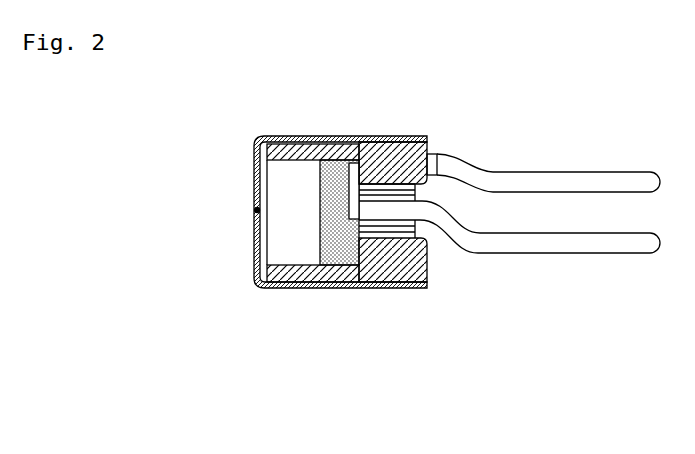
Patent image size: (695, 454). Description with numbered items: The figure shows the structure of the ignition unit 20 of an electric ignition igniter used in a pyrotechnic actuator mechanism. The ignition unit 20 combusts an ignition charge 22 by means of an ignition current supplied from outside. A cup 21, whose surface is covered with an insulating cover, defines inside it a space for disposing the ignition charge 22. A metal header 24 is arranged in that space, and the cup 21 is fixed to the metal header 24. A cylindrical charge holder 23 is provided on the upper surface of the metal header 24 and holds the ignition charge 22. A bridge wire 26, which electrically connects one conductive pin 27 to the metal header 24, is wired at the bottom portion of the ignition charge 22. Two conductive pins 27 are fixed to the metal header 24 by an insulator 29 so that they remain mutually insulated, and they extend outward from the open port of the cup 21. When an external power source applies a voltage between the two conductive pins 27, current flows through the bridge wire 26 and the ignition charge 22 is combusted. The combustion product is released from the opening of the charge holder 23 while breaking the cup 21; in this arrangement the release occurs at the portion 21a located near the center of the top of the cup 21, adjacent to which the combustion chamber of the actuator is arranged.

The ignition unit 20 is at (242, 372).
The cup 21 is at (262, 137).
The portion 21a is at (255, 210).
The ignition charge 22 is at (320, 192).
The charge holder 23 is at (295, 265).
The metal header 24 is at (377, 272).
The bridge wire 26 is at (354, 166).
The conductive pin 27 is at (560, 172).
The insulator 29 is at (400, 190).